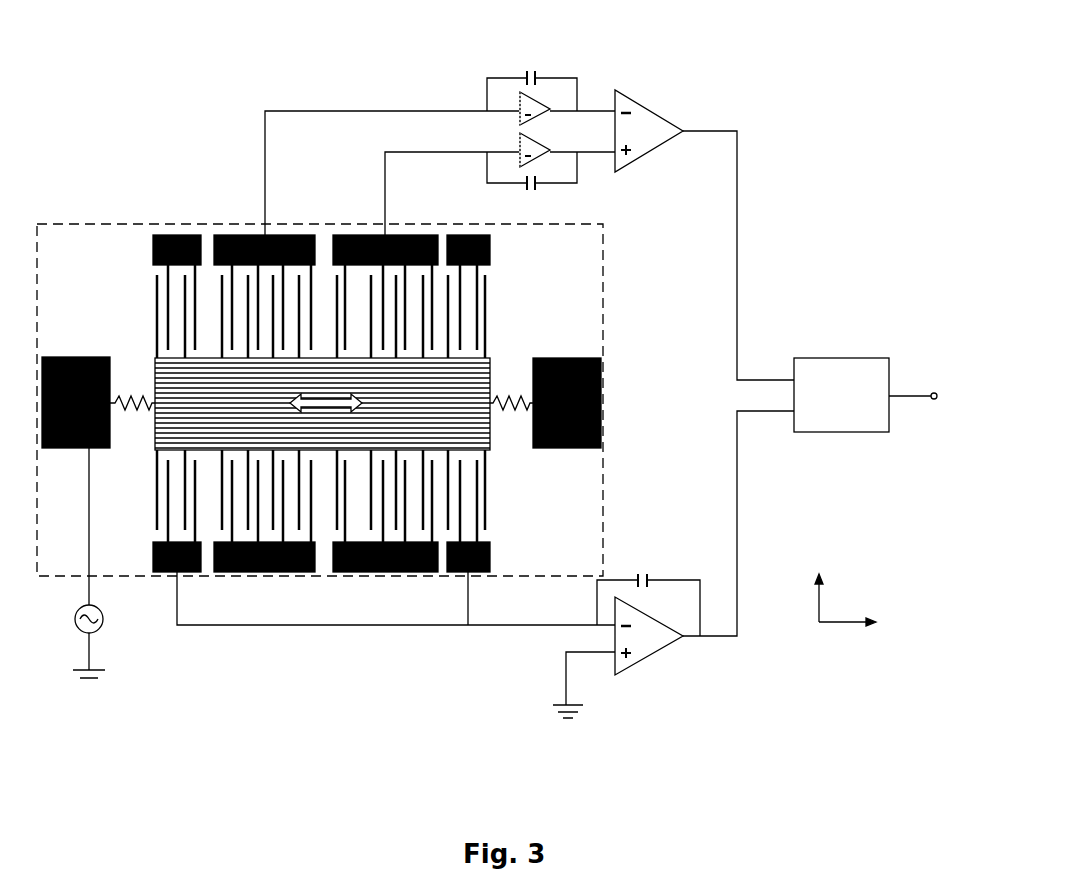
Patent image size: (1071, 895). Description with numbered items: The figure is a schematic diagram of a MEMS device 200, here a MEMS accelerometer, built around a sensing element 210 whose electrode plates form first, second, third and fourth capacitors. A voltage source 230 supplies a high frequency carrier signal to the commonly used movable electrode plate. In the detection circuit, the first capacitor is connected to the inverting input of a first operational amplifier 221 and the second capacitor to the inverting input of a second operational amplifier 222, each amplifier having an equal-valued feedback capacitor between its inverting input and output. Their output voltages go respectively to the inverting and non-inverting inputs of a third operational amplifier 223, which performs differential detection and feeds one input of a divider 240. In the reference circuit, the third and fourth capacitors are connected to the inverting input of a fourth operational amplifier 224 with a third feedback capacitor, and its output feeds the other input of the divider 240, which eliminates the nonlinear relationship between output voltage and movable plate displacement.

The MEMS device 200 is at (131, 31).
The sensing element 210 is at (110, 222).
The first operational amplifier 221 is at (520, 102).
The second operational amplifier 222 is at (520, 145).
The third operational amplifier 223 is at (645, 110).
The fourth operational amplifier 224 is at (640, 657).
The voltage source 230 is at (101, 625).
The divider 240 is at (841, 358).